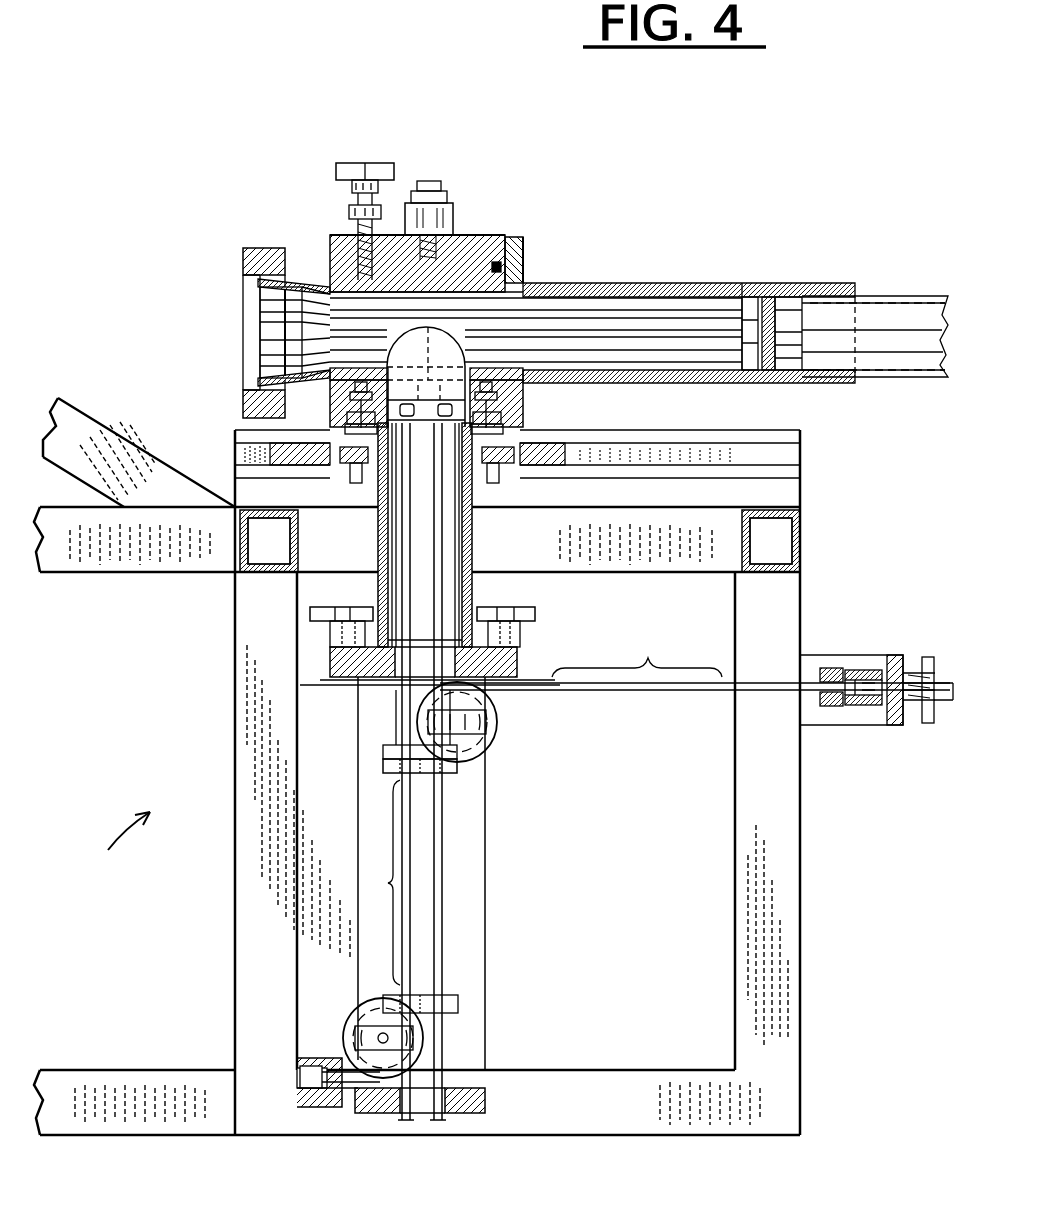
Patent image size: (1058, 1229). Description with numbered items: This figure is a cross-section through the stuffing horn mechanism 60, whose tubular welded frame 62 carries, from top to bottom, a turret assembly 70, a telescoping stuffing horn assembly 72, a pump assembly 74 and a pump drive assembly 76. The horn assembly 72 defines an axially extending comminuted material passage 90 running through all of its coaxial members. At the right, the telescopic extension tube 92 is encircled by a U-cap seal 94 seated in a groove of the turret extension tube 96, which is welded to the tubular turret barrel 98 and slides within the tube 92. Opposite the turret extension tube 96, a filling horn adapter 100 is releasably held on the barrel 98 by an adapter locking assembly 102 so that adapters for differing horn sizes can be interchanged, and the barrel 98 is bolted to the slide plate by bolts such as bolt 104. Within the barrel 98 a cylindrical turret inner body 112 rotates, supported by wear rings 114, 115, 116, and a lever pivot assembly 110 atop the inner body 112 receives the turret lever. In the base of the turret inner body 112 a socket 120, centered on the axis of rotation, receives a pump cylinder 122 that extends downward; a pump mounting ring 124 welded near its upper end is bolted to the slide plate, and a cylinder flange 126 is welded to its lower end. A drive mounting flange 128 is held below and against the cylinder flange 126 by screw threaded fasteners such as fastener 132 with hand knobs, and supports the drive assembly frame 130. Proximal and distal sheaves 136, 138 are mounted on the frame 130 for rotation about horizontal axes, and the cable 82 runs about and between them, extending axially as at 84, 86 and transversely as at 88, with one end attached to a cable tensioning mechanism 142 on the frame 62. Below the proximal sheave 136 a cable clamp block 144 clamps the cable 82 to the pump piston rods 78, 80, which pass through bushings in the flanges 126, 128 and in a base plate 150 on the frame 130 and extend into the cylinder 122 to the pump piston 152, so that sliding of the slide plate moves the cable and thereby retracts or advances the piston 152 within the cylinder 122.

The stuffing horn mechanism 60 is at (121, 849).
The tubular welded frame 62 is at (85, 572).
The turret assembly 70 is at (523, 275).
The telescoping stuffing horn assembly 72 is at (738, 283).
The pump assembly 74 is at (378, 542).
The pump drive assembly 76 is at (488, 912).
The pump piston rod 78 is at (410, 825).
The pump piston rod 80 is at (440, 872).
The cable 82 is at (610, 690).
The axially extending cable portion 84 is at (637, 657).
The axially extending cable portion 86 is at (345, 1065).
The transversely extending cable portion 88 is at (403, 837).
The comminuted material passage 90 is at (698, 290).
The telescopic extension tube 92 is at (882, 296).
The U-cap seal 94 is at (760, 305).
The turret extension tube 96 is at (822, 384).
The turret barrel 98 is at (525, 262).
The filling horn adapter 100 is at (305, 285).
The adapter locking assembly 102 is at (370, 168).
The bolt 104 is at (258, 380).
The lever pivot assembly 110 is at (433, 178).
The turret inner body 112 is at (455, 238).
The upper wear ring 114 is at (525, 245).
The wear ring 115 is at (523, 402).
The lower wear ring 116 is at (523, 432).
The socket 120 is at (355, 347).
The pump cylinder 122 is at (472, 540).
The pump mounting ring 124 is at (270, 478).
The cylinder flange 126 is at (330, 652).
The drive mounting flange 128 is at (385, 672).
The drive assembly frame 130 is at (375, 716).
The screw threaded fastener 132 is at (330, 629).
The proximal sheave 136 is at (520, 630).
The distal sheave 138 is at (420, 1036).
The cable tensioning mechanism 142 is at (848, 665).
The cable clamp block 144 is at (460, 772).
The base plate 150 is at (455, 1092).
The pump piston 152 is at (280, 340).